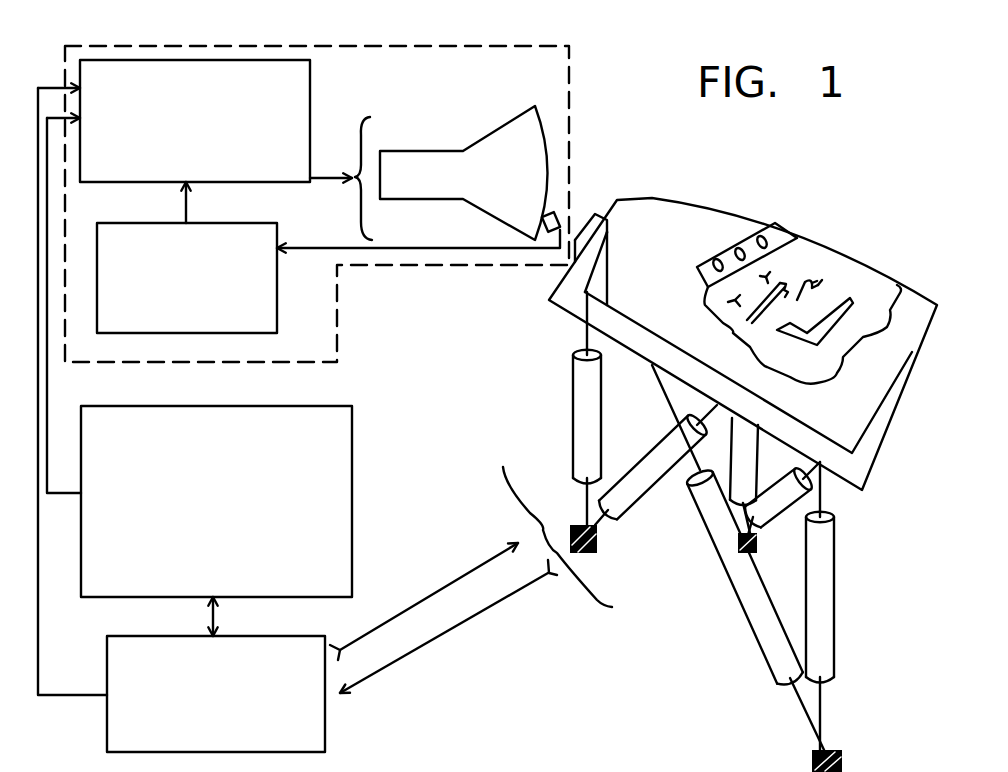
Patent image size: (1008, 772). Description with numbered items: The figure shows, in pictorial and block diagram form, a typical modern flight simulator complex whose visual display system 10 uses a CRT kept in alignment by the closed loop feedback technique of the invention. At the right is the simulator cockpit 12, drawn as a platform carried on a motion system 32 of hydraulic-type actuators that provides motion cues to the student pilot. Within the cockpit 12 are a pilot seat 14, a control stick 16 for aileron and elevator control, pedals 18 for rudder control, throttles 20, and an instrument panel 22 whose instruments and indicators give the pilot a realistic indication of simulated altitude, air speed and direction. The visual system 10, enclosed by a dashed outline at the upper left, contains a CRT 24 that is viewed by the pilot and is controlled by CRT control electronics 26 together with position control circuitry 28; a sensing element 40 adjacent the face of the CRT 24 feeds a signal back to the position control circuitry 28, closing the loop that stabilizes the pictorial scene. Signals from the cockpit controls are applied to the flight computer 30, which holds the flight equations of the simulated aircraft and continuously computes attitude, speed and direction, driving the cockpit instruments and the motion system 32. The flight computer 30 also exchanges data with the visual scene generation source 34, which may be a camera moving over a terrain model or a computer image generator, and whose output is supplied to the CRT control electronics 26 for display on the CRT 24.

The CRT display visual system 10 is at (480, 266).
The cockpit 12 is at (840, 236).
The pilot seat 14 is at (857, 293).
The control stick 16 is at (780, 290).
The pedals 18 is at (772, 285).
The throttles 20 is at (817, 277).
The instrument panel 22 is at (772, 228).
The CRT 24 is at (488, 133).
The CRT control electronics 26 is at (310, 95).
The position control circuitry 28 is at (277, 286).
The flight computer 30 is at (216, 694).
The motion system 32 is at (845, 648).
The visual scene generation source 34 is at (352, 535).
The position sensor 40 is at (552, 214).